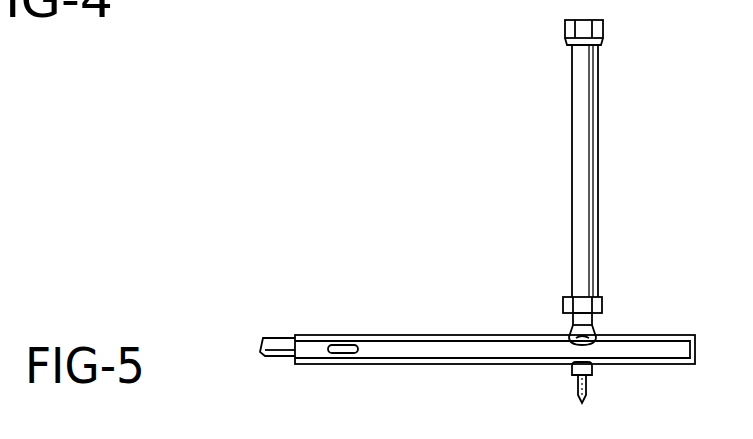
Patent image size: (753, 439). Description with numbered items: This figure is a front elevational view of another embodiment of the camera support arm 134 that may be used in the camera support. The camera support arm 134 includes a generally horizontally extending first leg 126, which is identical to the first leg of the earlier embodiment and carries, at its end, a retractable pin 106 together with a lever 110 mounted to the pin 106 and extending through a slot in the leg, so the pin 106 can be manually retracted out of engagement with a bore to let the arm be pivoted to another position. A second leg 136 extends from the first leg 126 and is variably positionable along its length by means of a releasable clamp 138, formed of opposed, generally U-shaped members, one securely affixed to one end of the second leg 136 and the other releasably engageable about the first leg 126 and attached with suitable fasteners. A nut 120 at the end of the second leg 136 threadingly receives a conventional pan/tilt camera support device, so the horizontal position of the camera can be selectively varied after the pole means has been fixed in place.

The pin 106 is at (270, 337).
The lever 110 is at (333, 348).
The nut 120 is at (582, 20).
The first leg 126 is at (410, 337).
The camera support arm 134 is at (520, 273).
The second leg 136 is at (583, 203).
The releasable clamp 138 is at (592, 376).